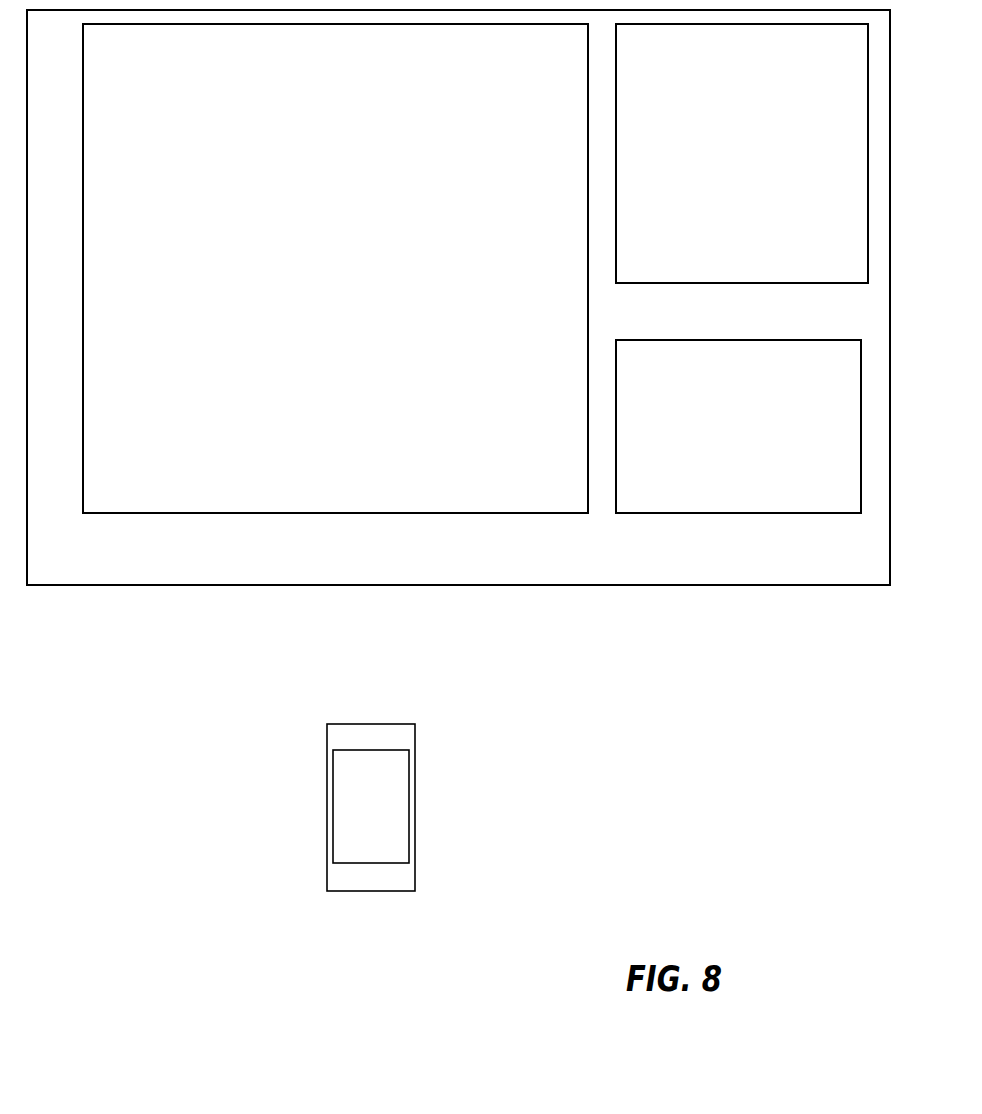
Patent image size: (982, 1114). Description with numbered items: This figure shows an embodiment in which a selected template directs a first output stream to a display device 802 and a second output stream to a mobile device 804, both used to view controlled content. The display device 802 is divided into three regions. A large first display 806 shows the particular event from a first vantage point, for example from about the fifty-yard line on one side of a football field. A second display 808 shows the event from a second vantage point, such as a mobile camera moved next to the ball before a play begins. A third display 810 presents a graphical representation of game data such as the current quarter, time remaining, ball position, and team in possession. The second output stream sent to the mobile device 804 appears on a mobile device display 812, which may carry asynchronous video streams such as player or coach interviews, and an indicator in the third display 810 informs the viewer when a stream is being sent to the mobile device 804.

The display device 802 is at (126, 564).
The mobile device 804 is at (338, 734).
The first display 806 is at (144, 72).
The second display 808 is at (673, 68).
The third display 810 is at (673, 384).
The mobile device display 812 is at (386, 818).